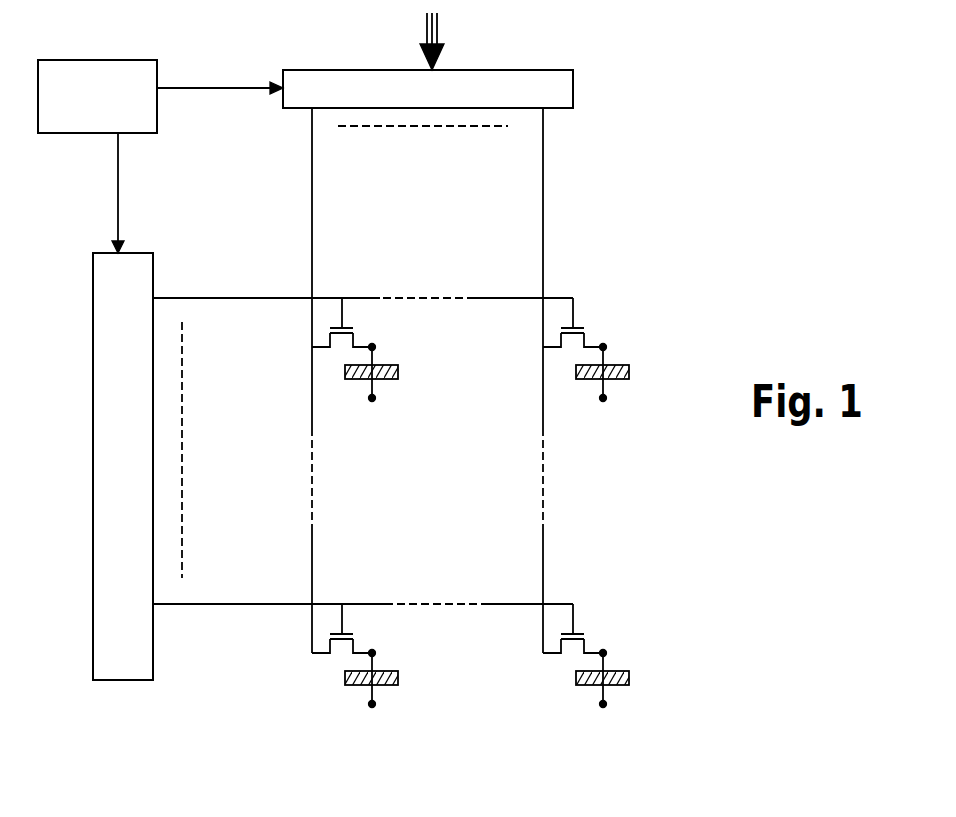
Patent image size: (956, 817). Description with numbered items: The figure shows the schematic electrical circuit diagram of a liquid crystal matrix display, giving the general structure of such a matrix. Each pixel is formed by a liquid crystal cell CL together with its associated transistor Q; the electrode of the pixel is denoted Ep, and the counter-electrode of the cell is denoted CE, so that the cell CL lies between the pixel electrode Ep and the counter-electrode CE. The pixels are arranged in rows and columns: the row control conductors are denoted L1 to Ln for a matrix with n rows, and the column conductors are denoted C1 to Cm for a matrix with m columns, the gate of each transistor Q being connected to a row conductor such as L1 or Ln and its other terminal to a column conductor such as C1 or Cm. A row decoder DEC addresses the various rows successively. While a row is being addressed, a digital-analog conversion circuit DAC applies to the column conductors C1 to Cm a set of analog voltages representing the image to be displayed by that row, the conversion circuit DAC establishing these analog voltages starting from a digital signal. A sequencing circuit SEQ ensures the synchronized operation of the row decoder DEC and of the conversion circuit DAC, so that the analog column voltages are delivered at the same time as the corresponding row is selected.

The sequencing circuit SEQ is at (160, 142).
The digital-analog conversion circuit DAC is at (456, 69).
The row decoder DEC is at (107, 466).
The column conductor C1 is at (294, 380).
The column conductor Cm is at (523, 380).
The row control conductor L1 is at (363, 283).
The row control conductor Ln is at (363, 629).
The transistor Q is at (457, 475).
The pixel electrode Ep is at (503, 495).
The liquid crystal cell CL is at (505, 525).
The counter-electrode CE is at (483, 566).